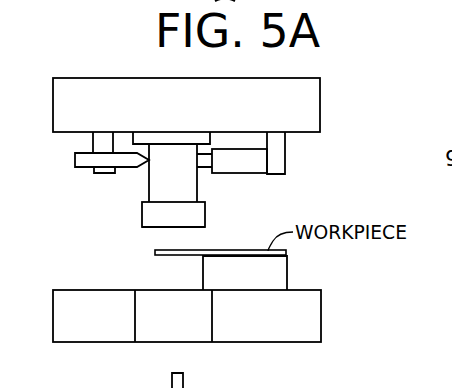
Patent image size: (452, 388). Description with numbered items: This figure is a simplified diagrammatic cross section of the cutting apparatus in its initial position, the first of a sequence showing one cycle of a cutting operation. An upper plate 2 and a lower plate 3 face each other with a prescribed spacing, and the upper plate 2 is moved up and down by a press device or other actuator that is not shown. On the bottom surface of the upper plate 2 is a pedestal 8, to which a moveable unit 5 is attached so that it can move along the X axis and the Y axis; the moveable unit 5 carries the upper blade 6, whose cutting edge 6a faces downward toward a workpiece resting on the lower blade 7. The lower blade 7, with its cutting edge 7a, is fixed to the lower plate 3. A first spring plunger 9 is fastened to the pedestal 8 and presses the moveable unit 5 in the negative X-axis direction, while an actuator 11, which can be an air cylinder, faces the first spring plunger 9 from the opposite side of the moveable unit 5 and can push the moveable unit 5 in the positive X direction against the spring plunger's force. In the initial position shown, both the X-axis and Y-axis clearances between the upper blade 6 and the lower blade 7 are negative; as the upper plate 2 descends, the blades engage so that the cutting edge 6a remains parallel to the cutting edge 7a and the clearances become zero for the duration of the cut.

The upper plate 2 is at (68, 78).
The pedestal 8 is at (157, 135).
The first spring plunger 9 is at (75, 160).
The moveable unit 5 is at (185, 186).
The upper blade 6 is at (197, 213).
The cutting edge 6a is at (205, 226).
The actuator 11 is at (250, 165).
The lower blade 7 is at (278, 272).
The cutting edge 7a is at (203, 272).
The lower plate 3 is at (78, 343).